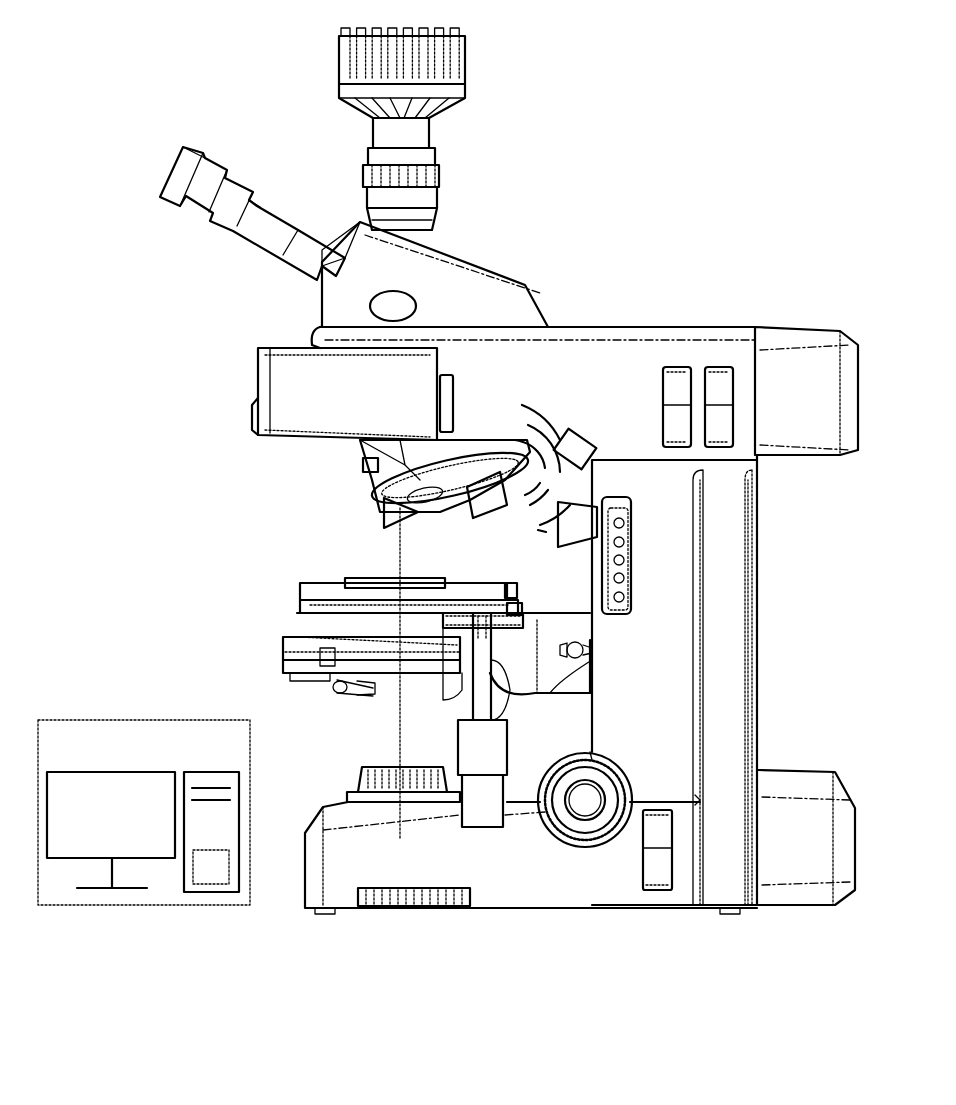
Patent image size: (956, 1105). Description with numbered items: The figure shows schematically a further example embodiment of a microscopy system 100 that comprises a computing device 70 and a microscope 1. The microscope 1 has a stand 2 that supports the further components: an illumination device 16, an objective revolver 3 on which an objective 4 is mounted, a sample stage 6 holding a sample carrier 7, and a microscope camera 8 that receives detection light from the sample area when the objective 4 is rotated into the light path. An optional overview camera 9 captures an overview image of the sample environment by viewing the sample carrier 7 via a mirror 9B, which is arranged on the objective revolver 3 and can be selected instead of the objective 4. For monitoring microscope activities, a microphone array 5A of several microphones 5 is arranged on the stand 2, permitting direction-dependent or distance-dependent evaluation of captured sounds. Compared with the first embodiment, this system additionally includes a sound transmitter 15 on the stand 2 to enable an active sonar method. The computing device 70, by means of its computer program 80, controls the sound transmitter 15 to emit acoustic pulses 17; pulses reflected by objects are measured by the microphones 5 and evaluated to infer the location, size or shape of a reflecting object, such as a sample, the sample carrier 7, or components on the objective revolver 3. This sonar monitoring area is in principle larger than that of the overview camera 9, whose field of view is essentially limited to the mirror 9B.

The microscopy system 100 is at (632, 76).
The microscope 1 is at (688, 294).
The stand 2 is at (735, 740).
The objective changer/revolver 3 is at (362, 466).
The objective 4 is at (473, 516).
The microphone 5 is at (626, 560).
The microphone array 5A is at (625, 523).
The sample stage 6 is at (320, 608).
The sample carrier 7 is at (340, 590).
The microscope camera 8 is at (455, 62).
The overview camera 9 is at (577, 524).
The mirror 9B is at (380, 518).
The sound transmitter 15 is at (568, 440).
The illumination device 16 is at (355, 855).
The acoustic pulses 17 is at (532, 548).
The computing device 70 is at (144, 812).
The computer program 80 is at (211, 867).